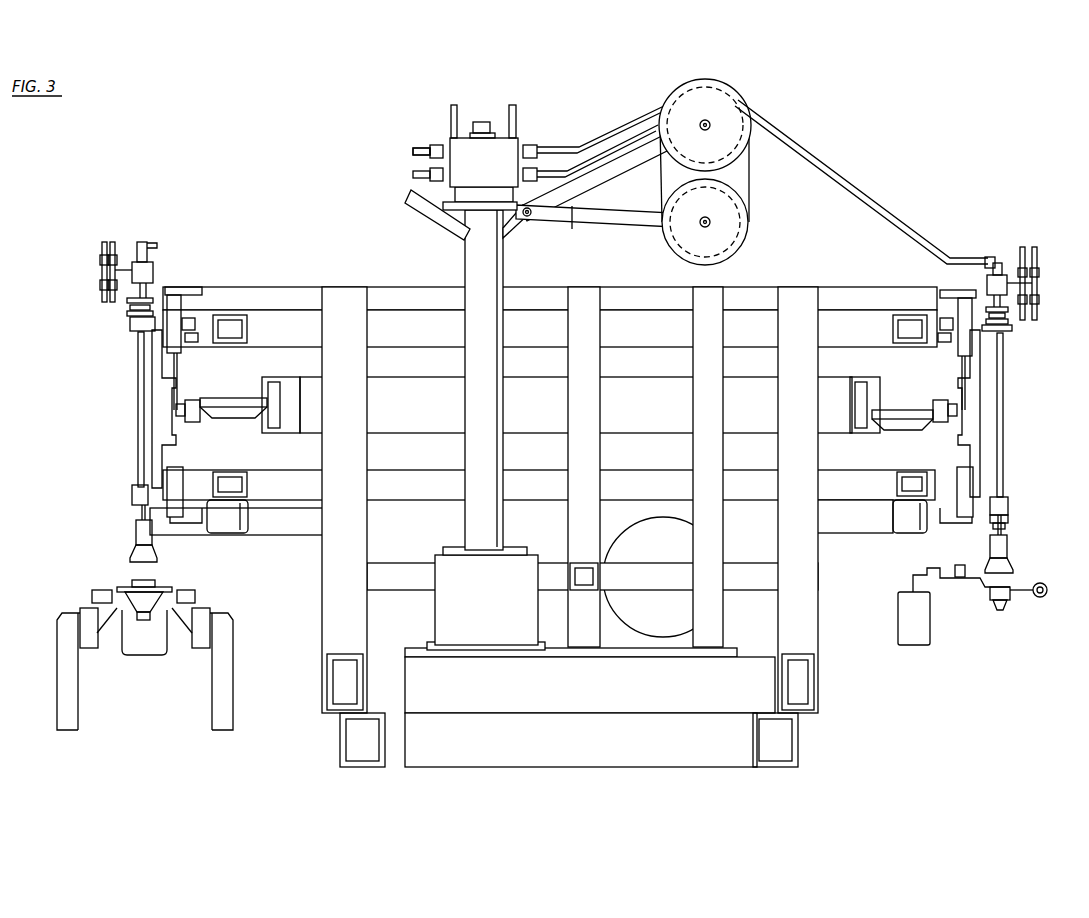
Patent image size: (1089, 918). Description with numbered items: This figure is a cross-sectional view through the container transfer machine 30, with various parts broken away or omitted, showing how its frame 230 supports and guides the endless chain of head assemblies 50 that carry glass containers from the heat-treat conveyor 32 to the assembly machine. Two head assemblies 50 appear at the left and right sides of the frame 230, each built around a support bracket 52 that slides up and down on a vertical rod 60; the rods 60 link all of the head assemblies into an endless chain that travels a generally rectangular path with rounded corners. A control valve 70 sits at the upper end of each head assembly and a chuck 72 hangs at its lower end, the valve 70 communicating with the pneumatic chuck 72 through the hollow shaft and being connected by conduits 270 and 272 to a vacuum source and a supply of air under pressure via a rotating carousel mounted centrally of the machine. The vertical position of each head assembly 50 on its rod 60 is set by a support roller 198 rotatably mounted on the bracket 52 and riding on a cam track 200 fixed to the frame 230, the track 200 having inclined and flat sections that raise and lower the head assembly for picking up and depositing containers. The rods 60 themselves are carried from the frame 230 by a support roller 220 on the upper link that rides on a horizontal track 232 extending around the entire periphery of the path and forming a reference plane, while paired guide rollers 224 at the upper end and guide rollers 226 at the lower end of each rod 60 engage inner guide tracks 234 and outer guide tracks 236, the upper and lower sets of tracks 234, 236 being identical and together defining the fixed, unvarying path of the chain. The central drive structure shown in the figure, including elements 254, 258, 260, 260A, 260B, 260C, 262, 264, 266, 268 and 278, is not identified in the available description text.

The machine 30 is at (612, 783).
The heat-treat conveyor 32 is at (967, 613).
The head assembly 50 is at (120, 378).
The support bracket 52 is at (150, 421).
The vertical rod 60 is at (178, 375).
The control valve 70 is at (157, 264).
The chuck 72 is at (125, 550).
The support roller 198 is at (192, 420).
The track 200 is at (190, 438).
The support roller 220 is at (182, 325).
The guide rollers 224 is at (178, 290).
The guide rollers 226 is at (150, 513).
The frame 230 is at (283, 282).
The track 232 is at (190, 342).
The inner guide track 234 is at (180, 307).
The outer guide track 236 is at (1015, 305).
The drive unit 254 is at (490, 118).
The center column 258 is at (503, 285).
The drive arm 260 is at (430, 210).
The upper pulley 260A is at (718, 100).
The lower pulley 260B is at (727, 242).
The link arm 260C is at (592, 220).
The gear box 262 is at (475, 166).
The post 264 is at (451, 112).
The post 266 is at (516, 112).
The fitting 268 is at (450, 140).
The conduit 270 is at (548, 148).
The conduit 272 is at (595, 135).
The belt 278 is at (750, 193).